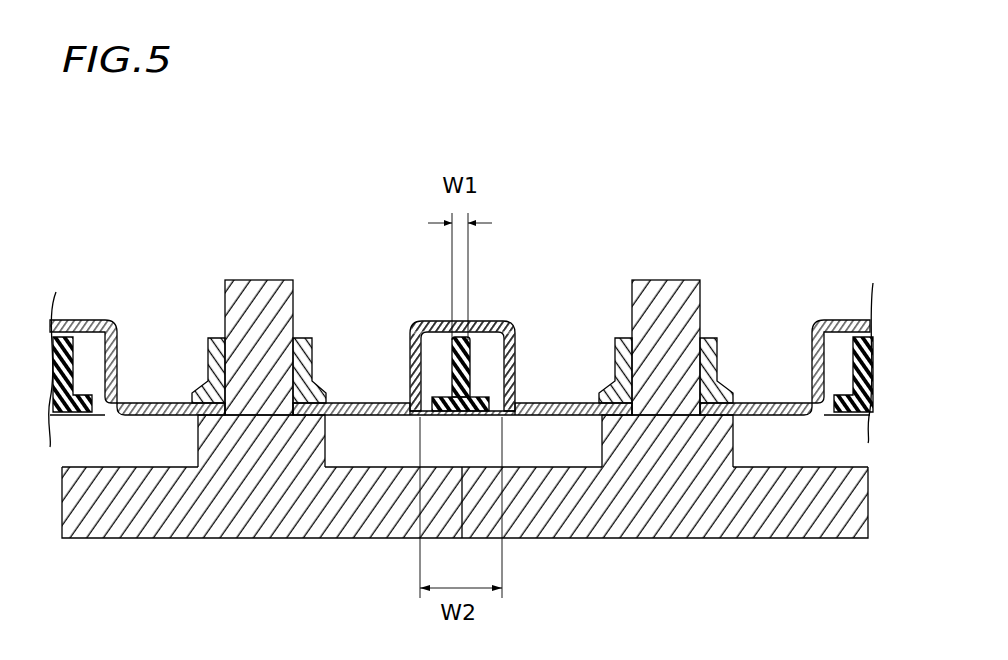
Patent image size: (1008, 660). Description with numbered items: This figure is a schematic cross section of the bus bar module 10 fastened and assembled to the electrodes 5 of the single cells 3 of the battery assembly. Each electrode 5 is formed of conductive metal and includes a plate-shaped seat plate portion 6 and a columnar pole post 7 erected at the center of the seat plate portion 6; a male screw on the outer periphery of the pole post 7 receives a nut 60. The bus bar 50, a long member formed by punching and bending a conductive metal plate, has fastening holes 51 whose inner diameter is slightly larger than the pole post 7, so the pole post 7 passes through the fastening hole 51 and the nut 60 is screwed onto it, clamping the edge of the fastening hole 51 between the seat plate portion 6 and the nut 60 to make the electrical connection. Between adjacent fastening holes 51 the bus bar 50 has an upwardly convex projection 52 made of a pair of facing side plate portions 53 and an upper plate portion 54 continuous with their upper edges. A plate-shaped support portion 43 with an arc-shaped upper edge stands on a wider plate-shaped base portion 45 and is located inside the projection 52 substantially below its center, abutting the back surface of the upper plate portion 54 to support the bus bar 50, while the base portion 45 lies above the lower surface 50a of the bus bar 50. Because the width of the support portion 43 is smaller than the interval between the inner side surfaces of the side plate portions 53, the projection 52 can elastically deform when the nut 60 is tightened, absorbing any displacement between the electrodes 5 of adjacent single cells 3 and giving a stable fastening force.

The single cell 3 is at (152, 513).
The electrode 5 is at (302, 290).
The seat plate portion 6 is at (198, 440).
The pole post 7 is at (262, 290).
The bus bar module 10 is at (88, 286).
The support portion 43 is at (470, 357).
The base portion 45 is at (420, 415).
The bus bar 50 is at (843, 298).
The lower surface 50a is at (348, 417).
The fastening hole 51 is at (222, 418).
The projection 52 is at (469, 323).
The side plate portion 53 is at (410, 368).
The upper plate portion 54 is at (428, 322).
The nut 60 is at (207, 343).